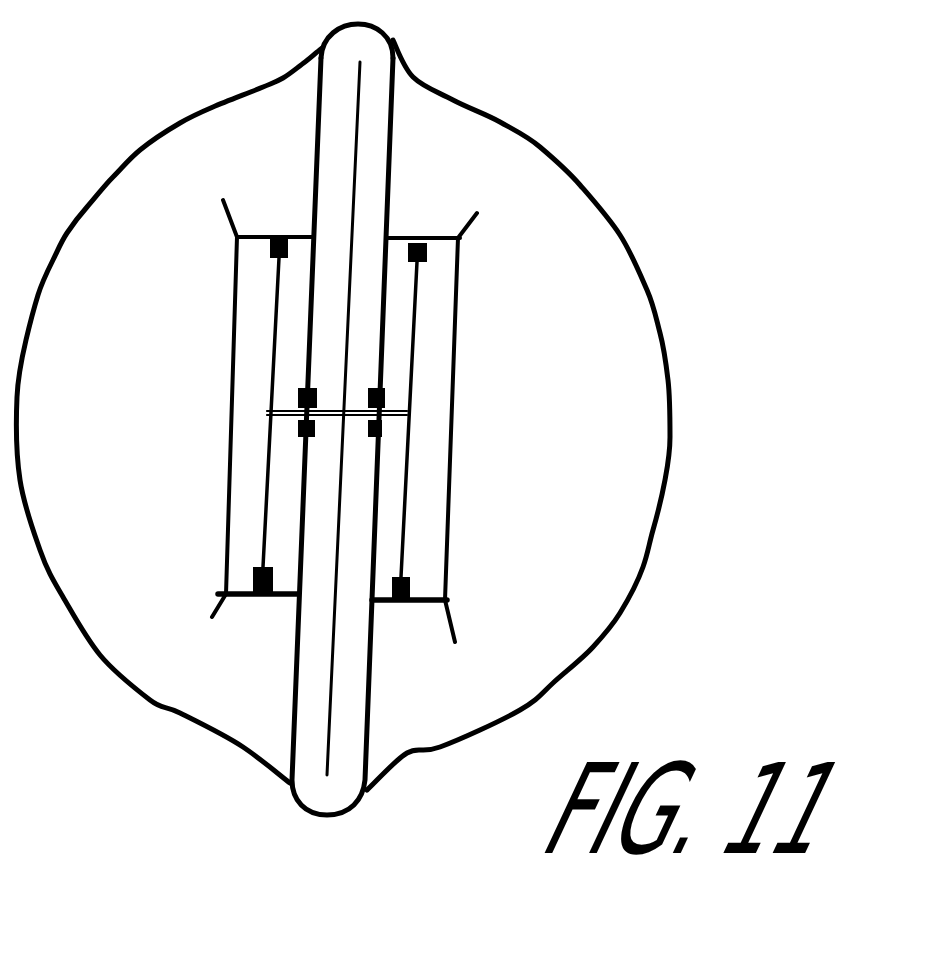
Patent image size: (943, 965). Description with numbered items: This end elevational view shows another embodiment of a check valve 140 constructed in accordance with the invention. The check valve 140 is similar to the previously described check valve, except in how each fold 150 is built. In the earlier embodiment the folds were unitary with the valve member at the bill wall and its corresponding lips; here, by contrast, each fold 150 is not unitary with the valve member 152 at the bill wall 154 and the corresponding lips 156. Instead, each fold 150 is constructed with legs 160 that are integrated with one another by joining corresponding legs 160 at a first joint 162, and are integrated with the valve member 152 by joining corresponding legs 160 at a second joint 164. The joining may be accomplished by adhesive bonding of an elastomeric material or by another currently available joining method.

The check valve 140 is at (619, 236).
The fold 150 is at (248, 287).
The valve member 152 is at (622, 370).
The bill wall 154 is at (590, 498).
The lips 156 is at (303, 720).
The legs 160 is at (290, 303).
The leg-to-leg joint 162 is at (280, 238).
The leg-to-valve-member joint 164 is at (300, 395).